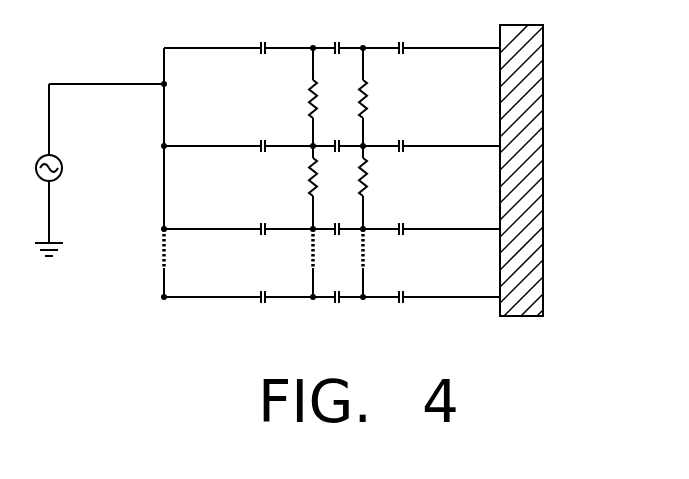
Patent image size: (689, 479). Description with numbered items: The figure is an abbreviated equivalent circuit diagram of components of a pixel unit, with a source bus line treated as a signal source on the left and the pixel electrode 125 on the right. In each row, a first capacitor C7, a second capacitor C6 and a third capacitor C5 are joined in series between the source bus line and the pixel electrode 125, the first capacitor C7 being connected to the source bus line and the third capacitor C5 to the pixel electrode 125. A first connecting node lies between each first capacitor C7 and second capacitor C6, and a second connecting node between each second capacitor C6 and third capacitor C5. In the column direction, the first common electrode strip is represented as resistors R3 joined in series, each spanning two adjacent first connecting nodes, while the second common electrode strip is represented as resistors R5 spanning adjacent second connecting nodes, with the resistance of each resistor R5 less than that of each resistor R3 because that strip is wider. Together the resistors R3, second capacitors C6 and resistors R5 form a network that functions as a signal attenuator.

The first capacitor C7 is at (263, 151).
The second capacitor C6 is at (336, 151).
The third capacitor C5 is at (400, 151).
The resistor R3 is at (308, 97).
The resistor R5 is at (366, 93).
The pixel electrode 125 is at (543, 82).